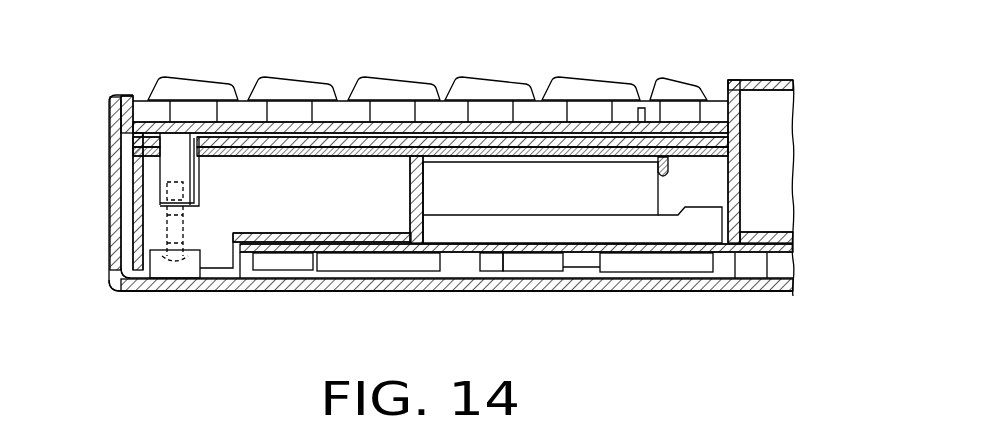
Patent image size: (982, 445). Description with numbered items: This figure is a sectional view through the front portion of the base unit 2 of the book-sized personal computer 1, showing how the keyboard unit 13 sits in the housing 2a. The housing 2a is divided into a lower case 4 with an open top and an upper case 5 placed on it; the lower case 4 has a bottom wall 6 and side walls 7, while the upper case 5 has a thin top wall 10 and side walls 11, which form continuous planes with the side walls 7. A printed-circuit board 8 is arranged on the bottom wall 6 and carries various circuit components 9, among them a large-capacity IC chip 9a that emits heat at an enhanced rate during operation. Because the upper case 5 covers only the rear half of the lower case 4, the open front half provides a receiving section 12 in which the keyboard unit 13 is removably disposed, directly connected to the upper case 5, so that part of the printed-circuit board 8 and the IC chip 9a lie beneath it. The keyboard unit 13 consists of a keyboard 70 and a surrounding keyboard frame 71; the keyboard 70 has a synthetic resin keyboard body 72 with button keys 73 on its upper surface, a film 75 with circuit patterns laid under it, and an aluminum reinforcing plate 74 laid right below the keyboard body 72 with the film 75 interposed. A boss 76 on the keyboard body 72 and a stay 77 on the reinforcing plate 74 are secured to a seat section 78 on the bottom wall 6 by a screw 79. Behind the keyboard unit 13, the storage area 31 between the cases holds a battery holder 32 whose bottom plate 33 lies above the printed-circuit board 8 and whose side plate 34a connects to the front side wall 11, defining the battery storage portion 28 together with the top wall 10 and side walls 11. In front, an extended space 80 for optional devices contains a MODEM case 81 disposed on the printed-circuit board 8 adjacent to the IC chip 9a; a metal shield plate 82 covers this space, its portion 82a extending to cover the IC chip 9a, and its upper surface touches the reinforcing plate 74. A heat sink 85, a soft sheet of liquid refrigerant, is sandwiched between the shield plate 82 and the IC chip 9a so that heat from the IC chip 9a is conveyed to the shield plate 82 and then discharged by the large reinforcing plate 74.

The personal computer 1 is at (98, 100).
The base unit 2 is at (220, 288).
The housing 2a is at (108, 184).
The lower case 4 is at (110, 288).
The upper case 5 is at (733, 85).
The bottom wall 6 is at (513, 292).
The side walls 7 is at (113, 215).
The printed-circuit board 8 is at (737, 257).
The circuit components 9 is at (400, 258).
The IC chip 9a is at (587, 205).
The top wall 10 is at (780, 82).
The side walls 11 is at (740, 127).
The receiving section 12 is at (140, 95).
The keyboard unit 13 is at (434, 80).
The battery storage portion 28 is at (782, 104).
The storage area 31 is at (776, 165).
The battery holder 32 is at (773, 276).
The bottom plate 33 is at (787, 230).
The side plate 34a is at (740, 200).
The keyboard 70 is at (377, 75).
The keyboard frame 71 is at (119, 122).
The keyboard body 72 is at (377, 127).
The button keys 73 is at (210, 87).
The reinforcing plate 74 is at (305, 128).
The film 75 is at (260, 143).
The boss 76 is at (110, 158).
The stay 77 is at (204, 193).
The seat section 78 is at (171, 270).
The screw 79 is at (150, 234).
The extended space 80 is at (313, 220).
The MODEM case 81 is at (342, 252).
The shield plate 82 is at (311, 135).
The portion 82a is at (605, 148).
The heat sink 85 is at (512, 163).